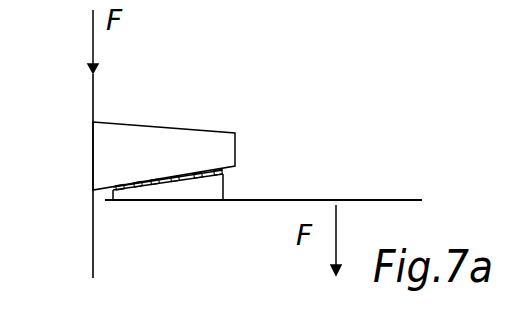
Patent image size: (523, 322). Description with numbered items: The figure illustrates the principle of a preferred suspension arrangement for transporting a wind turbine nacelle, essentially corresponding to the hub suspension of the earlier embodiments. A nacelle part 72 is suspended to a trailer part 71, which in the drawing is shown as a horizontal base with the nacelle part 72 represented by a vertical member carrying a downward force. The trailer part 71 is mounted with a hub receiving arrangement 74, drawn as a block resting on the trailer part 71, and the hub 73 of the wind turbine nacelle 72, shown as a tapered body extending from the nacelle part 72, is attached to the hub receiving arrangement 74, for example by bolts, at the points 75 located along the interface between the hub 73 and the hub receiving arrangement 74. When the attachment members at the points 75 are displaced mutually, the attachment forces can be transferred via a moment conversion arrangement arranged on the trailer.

The trailer part 71 is at (340, 199).
The nacelle part 72 is at (92, 100).
The hub 73 is at (172, 128).
The hub receiving arrangement 74 is at (226, 186).
The points 75 is at (198, 174).